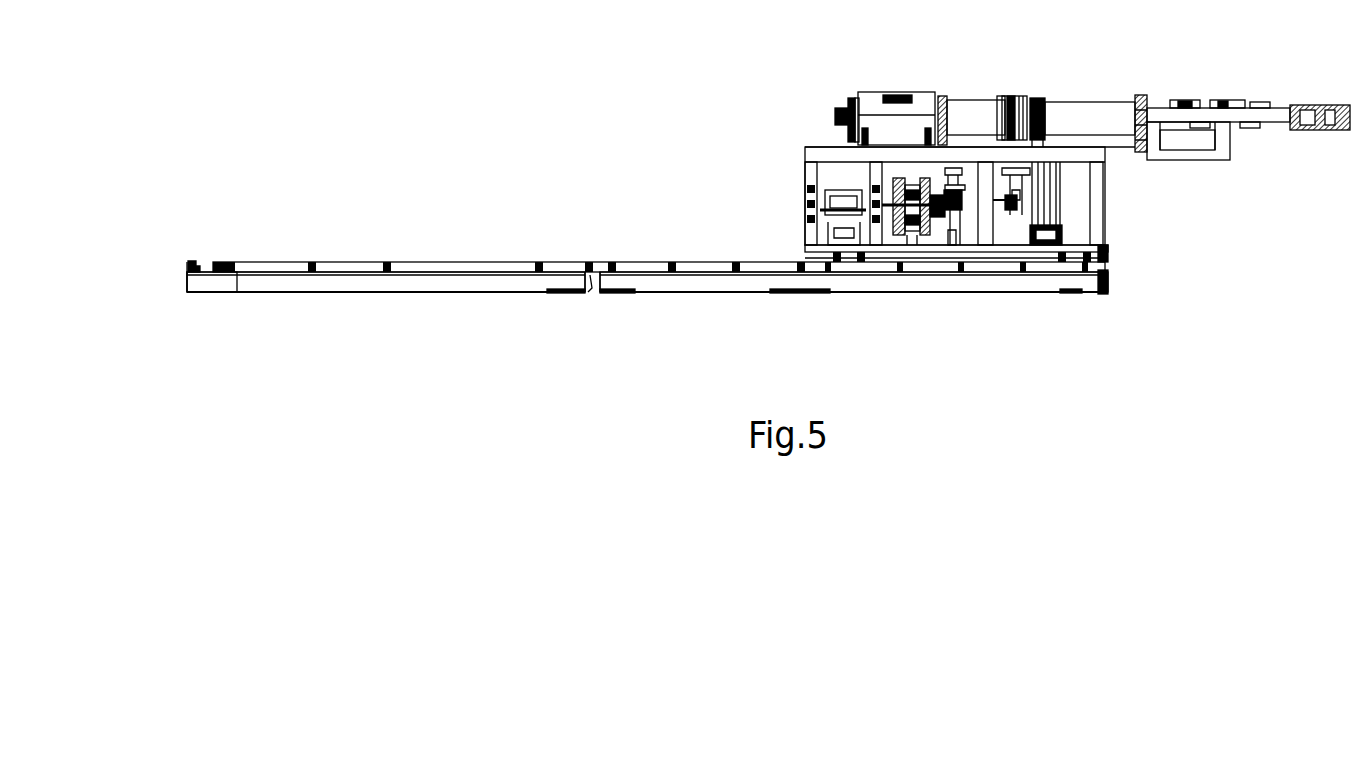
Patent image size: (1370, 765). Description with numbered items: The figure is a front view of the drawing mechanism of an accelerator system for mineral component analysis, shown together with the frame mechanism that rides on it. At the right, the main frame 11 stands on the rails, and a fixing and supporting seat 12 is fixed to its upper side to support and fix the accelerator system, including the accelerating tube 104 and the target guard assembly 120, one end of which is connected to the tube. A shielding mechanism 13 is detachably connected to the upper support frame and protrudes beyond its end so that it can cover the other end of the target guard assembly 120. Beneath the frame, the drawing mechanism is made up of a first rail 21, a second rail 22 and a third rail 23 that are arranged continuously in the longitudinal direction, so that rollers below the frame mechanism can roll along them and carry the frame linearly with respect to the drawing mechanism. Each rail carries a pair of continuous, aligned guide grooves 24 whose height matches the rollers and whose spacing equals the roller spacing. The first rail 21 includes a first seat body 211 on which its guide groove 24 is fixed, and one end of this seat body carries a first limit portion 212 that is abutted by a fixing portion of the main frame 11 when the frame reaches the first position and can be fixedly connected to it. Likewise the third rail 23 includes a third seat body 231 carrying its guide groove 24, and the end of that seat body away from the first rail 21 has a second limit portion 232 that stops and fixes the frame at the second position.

The main frame 11 is at (1108, 215).
The fixing and supporting seat 12 is at (1018, 96).
The accelerating tube 104 is at (1080, 105).
The shielding mechanism 13 is at (1303, 105).
The target guard assembly 120 is at (1300, 130).
The first limit portion 212 is at (1110, 263).
The first rail 21 is at (944, 292).
The first seat body 211 is at (1022, 284).
The second rail 22 is at (444, 292).
The third rail 23 is at (313, 292).
The third seat body 231 is at (238, 285).
The second limit portion 232 is at (189, 262).
The guide groove 24 is at (363, 262).